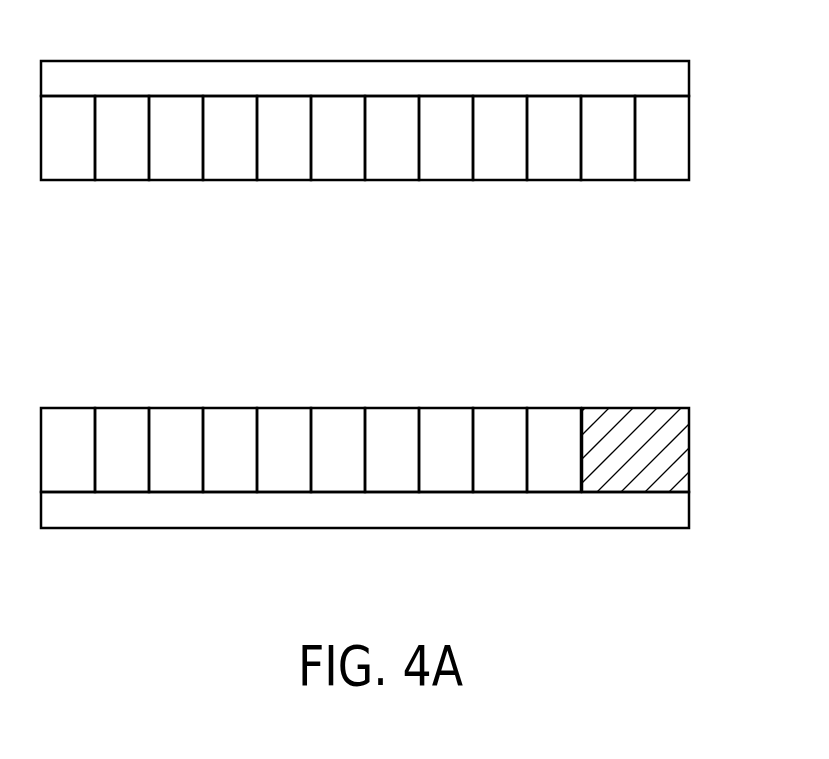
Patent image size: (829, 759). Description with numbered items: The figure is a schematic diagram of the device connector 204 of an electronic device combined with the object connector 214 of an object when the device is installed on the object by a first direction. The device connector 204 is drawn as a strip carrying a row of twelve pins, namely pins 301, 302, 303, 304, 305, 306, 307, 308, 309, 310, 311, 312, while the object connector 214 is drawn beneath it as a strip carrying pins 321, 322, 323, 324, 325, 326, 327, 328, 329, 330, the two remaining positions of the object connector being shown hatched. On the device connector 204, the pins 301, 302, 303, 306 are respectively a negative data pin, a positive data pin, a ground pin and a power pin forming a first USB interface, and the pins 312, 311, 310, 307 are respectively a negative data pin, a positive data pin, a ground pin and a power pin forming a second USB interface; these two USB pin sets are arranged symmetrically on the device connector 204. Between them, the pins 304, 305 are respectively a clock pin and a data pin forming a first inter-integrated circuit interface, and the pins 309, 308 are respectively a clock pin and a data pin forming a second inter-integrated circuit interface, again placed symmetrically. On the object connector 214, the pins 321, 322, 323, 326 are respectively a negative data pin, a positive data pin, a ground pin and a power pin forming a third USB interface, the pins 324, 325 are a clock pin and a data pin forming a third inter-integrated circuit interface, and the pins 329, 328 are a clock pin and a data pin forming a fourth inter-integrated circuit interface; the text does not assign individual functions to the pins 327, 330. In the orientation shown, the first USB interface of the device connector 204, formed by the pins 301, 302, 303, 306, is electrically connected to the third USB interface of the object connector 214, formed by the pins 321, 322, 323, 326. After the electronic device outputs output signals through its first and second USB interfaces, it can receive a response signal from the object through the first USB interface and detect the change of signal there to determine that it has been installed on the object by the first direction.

The device connector 204 is at (678, 82).
The object connector 214 is at (678, 505).
The negative data pin 301 is at (69, 168).
The positive data pin 302 is at (123, 168).
The ground pin 303 is at (177, 168).
The clock pin 304 is at (231, 168).
The data pin 305 is at (285, 168).
The power pin 306 is at (339, 168).
The power pin 307 is at (393, 168).
The data pin 308 is at (447, 168).
The clock pin 309 is at (501, 168).
The ground pin 310 is at (555, 168).
The positive data pin 311 is at (609, 168).
The negative data pin 312 is at (662, 168).
The negative data pin 321 is at (69, 420).
The positive data pin 322 is at (123, 420).
The ground pin 323 is at (177, 420).
The clock pin 324 is at (231, 420).
The data pin 325 is at (285, 420).
The power pin 326 is at (339, 420).
The pin 327 is at (393, 420).
The data pin 328 is at (447, 420).
The clock pin 329 is at (501, 420).
The pin 330 is at (555, 420).